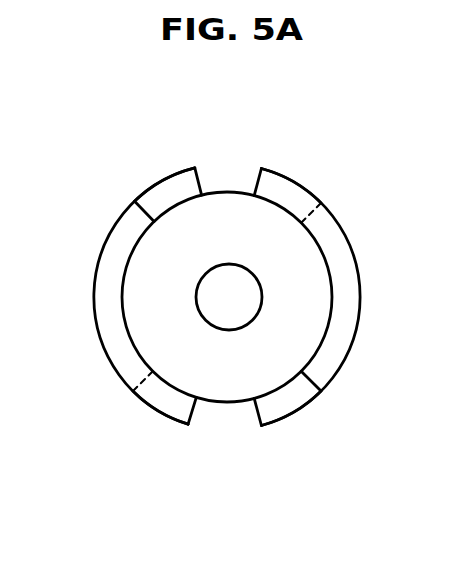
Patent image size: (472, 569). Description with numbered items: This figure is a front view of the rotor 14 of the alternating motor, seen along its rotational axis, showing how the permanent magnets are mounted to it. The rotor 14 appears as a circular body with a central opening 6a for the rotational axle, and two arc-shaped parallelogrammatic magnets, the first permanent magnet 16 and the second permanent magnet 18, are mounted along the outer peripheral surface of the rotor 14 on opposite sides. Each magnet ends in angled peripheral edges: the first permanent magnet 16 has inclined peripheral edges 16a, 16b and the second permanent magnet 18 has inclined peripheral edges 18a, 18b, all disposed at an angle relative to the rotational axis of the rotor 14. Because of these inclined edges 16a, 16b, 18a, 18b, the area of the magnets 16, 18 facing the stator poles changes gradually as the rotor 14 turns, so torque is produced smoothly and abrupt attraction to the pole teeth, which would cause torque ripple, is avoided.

The center hole / shaft opening 6a is at (227, 283).
The rotor 14 is at (223, 385).
The first permanent magnet 16 is at (345, 318).
The inclined peripheral edge of the first permanent magnet 16a is at (292, 393).
The inclined peripheral edge of the first permanent magnet 16b is at (283, 198).
The second permanent magnet 18 is at (110, 282).
The inclined peripheral edge of the second permanent magnet 18a is at (172, 198).
The inclined peripheral edge of the second permanent magnet 18b is at (170, 398).